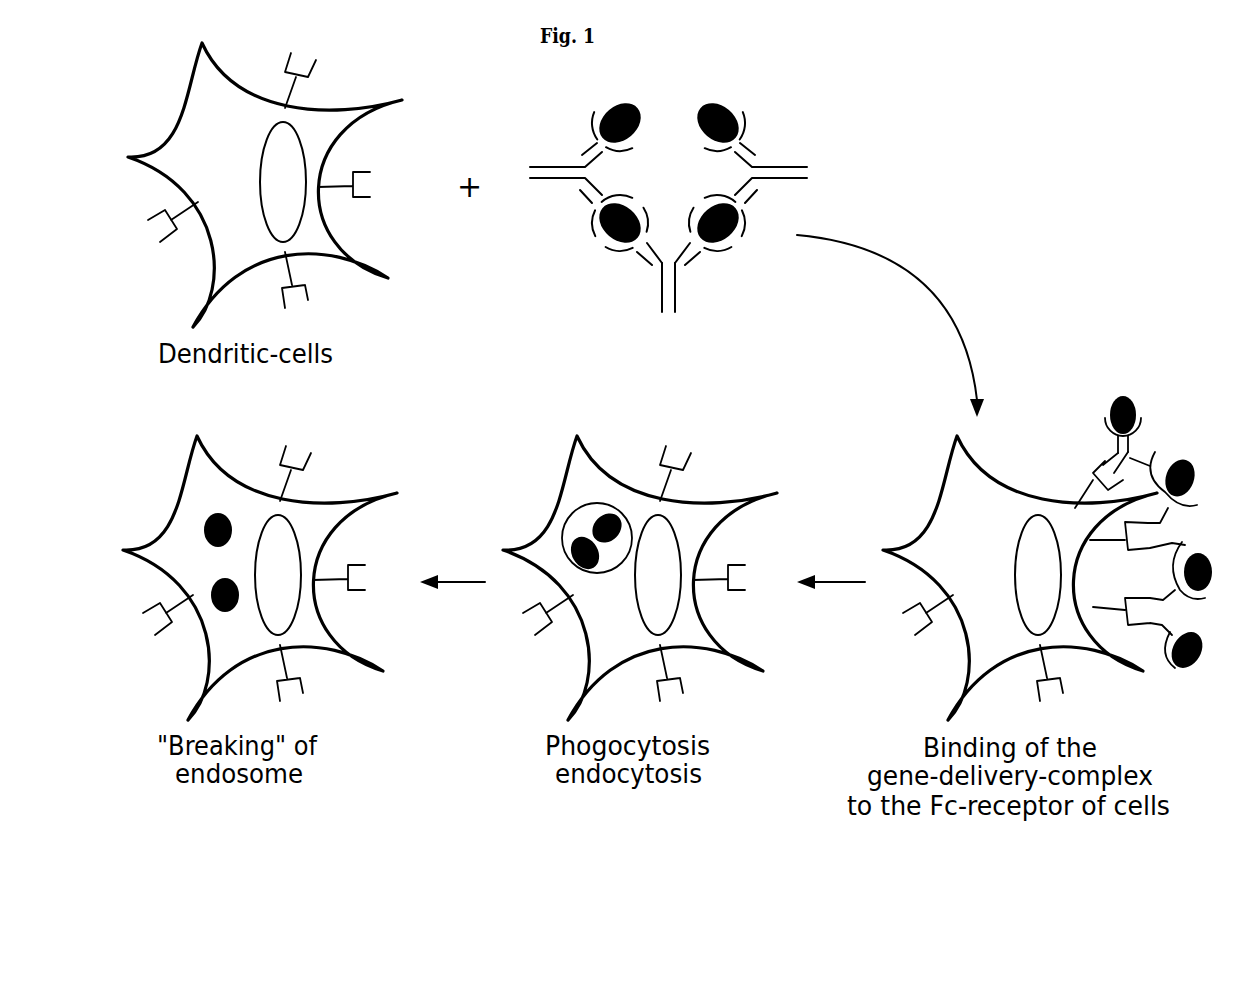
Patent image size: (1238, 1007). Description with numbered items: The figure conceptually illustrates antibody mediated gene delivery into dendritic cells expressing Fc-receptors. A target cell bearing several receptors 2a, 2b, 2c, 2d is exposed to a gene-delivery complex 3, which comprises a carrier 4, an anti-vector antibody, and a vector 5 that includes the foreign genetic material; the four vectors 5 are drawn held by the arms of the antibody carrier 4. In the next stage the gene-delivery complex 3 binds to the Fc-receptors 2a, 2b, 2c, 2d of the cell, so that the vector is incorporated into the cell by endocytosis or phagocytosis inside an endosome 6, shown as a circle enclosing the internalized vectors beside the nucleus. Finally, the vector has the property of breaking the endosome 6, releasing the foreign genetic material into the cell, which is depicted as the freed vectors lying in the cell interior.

The receptor 2a is at (422, 80).
The receptor 2b is at (376, 184).
The receptor 2c is at (311, 291).
The receptor 2d is at (152, 222).
The gene-delivery complex 3 is at (783, 240).
The carrier 4 is at (760, 149).
The vector 5 is at (733, 98).
The endosome 6 is at (563, 532).